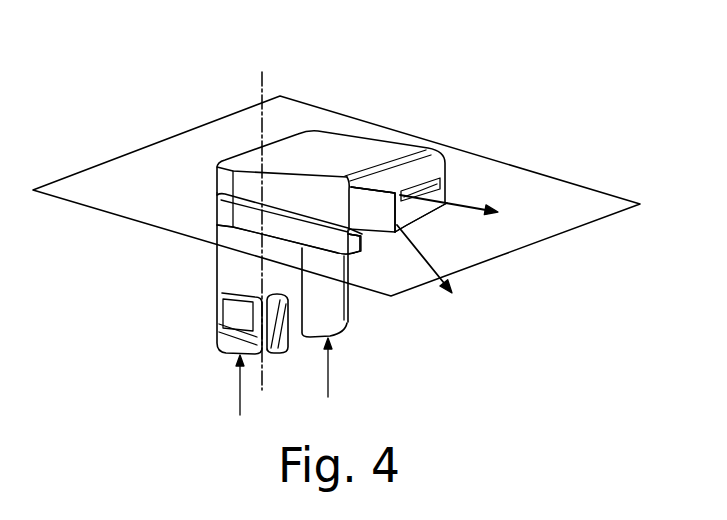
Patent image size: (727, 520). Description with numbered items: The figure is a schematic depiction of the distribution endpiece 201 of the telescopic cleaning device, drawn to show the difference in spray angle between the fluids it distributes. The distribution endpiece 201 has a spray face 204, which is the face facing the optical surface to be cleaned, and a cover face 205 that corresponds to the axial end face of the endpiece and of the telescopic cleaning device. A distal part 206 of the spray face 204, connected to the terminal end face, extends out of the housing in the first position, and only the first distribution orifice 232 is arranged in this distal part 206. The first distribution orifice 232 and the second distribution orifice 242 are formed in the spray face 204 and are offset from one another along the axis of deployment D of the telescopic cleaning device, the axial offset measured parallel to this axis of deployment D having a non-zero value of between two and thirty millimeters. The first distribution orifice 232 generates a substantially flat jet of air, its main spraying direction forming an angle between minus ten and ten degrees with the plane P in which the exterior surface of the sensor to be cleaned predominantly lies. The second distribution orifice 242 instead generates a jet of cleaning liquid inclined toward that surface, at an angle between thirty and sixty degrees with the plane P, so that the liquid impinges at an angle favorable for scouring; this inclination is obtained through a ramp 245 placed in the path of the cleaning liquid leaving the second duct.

The distribution endpiece 201 is at (411, 222).
The cover face 205 is at (334, 152).
The first distribution orifice 232 is at (438, 184).
The spray face 204 is at (407, 204).
The distal part of the spray face 206 is at (513, 302).
The second distribution orifice 242 is at (392, 238).
The ramp 245 is at (392, 238).
The axis of deployment D is at (262, 82).
The plane P is at (87, 206).